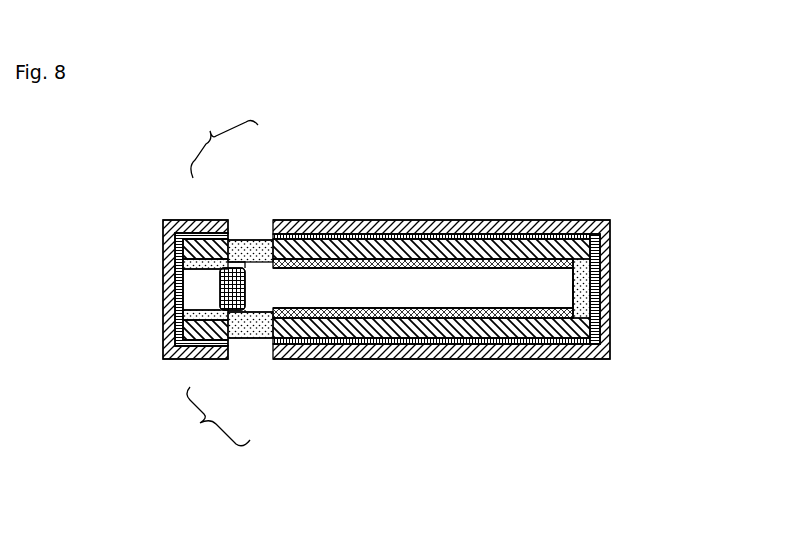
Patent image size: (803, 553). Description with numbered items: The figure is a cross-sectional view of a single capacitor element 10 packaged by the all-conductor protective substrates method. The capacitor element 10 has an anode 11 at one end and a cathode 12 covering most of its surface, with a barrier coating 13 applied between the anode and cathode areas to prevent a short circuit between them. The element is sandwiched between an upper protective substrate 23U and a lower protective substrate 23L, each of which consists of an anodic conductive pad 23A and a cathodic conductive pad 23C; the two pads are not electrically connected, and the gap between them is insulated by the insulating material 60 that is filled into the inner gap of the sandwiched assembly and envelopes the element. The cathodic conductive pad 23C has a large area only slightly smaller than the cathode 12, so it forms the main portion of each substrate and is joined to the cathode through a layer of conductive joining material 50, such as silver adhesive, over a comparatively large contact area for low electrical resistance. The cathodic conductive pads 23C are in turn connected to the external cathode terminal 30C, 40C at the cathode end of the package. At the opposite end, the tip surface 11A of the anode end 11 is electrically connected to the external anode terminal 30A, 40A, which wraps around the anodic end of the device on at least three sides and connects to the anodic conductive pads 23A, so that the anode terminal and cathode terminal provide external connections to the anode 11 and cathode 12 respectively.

The capacitor element 10 is at (468, 293).
The cathode 12 is at (447, 280).
The barrier coating 13 is at (163, 330).
The anode 11 is at (163, 303).
The tip surface 11A is at (163, 283).
The anodic conductive pad 23A is at (239, 240).
The cathodic conductive pad 23C is at (261, 240).
The upper protective substrate 23U is at (210, 147).
The lower protective substrate 23L is at (199, 416).
The external anode terminal 30A is at (163, 258).
The external cathode terminal 30C is at (405, 235).
The external anode terminal 40A is at (158, 218).
The external cathode terminal 40C is at (615, 217).
The conductive joining material 50 is at (447, 350).
The insulating material 60 is at (573, 360).